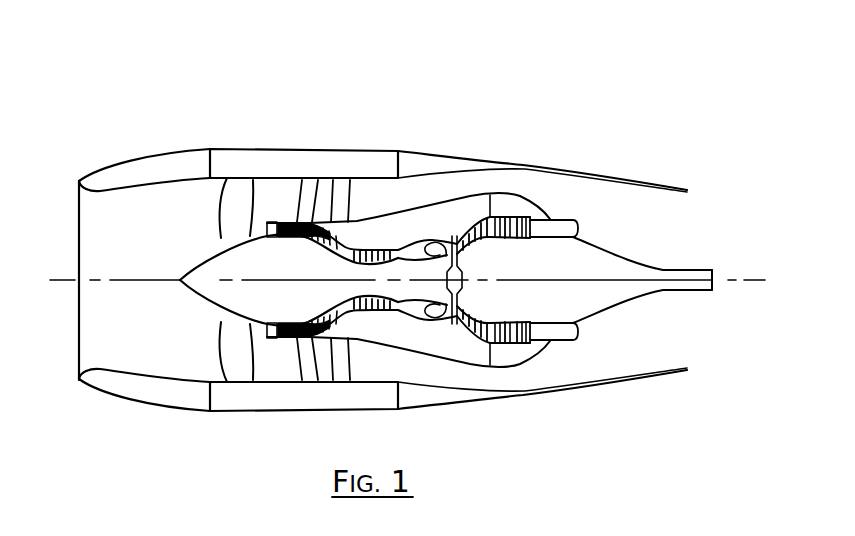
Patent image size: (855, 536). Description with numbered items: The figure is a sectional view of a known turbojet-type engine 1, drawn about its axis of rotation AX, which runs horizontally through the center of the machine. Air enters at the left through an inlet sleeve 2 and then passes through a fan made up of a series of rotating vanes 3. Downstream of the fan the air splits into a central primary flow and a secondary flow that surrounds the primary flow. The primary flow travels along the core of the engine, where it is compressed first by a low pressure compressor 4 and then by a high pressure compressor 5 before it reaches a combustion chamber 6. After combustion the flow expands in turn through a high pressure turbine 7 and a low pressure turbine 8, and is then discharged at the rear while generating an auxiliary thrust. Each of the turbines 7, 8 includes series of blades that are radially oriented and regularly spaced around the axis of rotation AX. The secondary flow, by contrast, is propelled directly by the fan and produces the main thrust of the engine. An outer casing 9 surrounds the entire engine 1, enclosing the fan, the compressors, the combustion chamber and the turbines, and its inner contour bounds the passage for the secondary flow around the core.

The turbojet-type engine 1 is at (115, 70).
The axis of rotation AX is at (62, 280).
The inlet sleeve 2 is at (144, 280).
The rotating vanes 3 is at (228, 347).
The low pressure compressor 4 is at (277, 222).
The high pressure compressor 5 is at (372, 243).
The combustion chamber 6 is at (434, 241).
The high pressure turbine 7 is at (467, 222).
The low pressure turbine 8 is at (500, 212).
The outer casing 9 is at (330, 160).